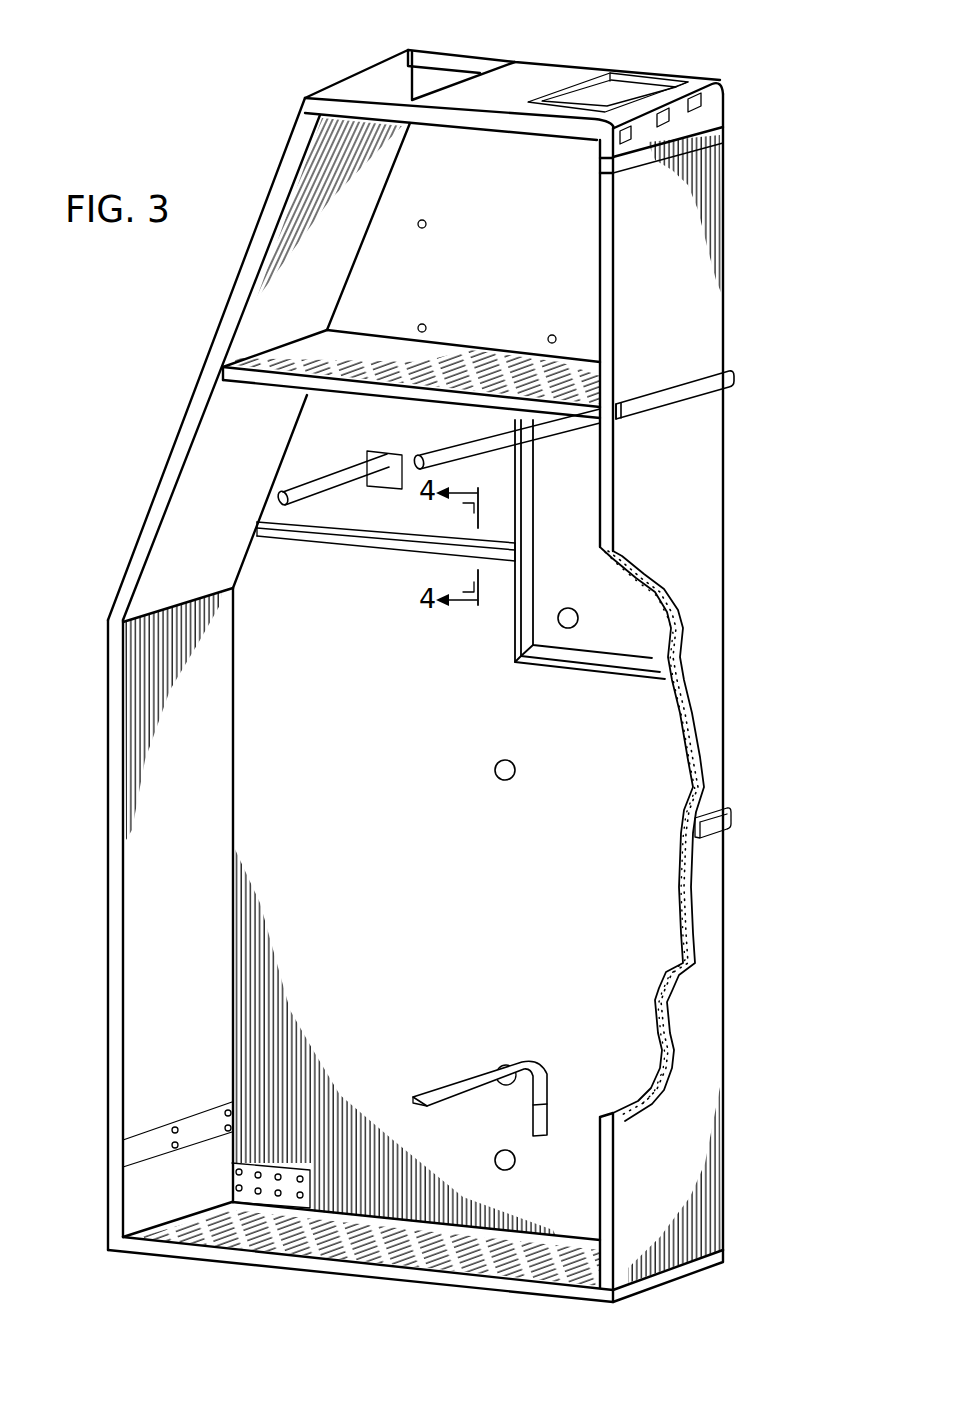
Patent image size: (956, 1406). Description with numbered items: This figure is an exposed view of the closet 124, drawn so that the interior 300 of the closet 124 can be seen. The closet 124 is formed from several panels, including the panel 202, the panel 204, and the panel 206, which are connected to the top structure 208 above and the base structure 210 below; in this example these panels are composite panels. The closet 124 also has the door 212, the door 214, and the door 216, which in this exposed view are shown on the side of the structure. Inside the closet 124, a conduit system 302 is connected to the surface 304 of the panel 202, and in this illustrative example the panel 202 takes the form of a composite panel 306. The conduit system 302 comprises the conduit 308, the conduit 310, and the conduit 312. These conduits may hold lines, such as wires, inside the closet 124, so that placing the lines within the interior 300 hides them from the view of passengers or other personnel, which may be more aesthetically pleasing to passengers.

The closet 124 is at (727, 444).
The panel 202 is at (535, 245).
The panel 204 is at (283, 162).
The panel 206 is at (107, 691).
The top structure 208 is at (556, 72).
The base structure 210 is at (688, 1269).
The door 212 is at (685, 289).
The door 214 is at (692, 505).
The door 216 is at (685, 1167).
The interior 300 is at (320, 784).
The conduit system 302 is at (378, 557).
The surface 304 is at (435, 740).
The composite panel 306 is at (470, 893).
The conduit 308 is at (284, 548).
The conduit 310 is at (537, 597).
The conduit 312 is at (590, 674).